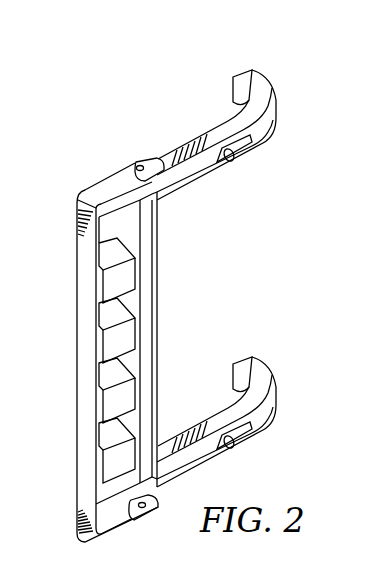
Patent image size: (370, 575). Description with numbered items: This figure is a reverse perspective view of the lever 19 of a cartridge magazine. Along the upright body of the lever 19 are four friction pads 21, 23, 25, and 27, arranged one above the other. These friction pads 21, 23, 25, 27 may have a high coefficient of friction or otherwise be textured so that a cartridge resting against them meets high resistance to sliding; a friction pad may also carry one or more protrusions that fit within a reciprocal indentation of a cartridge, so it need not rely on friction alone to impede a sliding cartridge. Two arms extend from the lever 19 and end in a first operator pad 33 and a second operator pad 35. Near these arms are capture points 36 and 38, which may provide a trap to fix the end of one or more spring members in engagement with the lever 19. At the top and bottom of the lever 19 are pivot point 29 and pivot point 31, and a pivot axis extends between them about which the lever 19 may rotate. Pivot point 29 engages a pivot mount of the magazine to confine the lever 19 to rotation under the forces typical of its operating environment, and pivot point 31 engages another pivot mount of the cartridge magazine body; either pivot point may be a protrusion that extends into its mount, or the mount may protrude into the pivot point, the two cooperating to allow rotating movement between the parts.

The lever 19 is at (117, 84).
The friction pad 21 is at (117, 279).
The friction pad 23 is at (117, 339).
The friction pad 25 is at (117, 399).
The friction pad 27 is at (117, 459).
The pivot point 29 is at (137, 165).
The pivot point 31 is at (132, 511).
The first operator pad 33 is at (233, 76).
The second operator pad 35 is at (234, 363).
The capture point 36 is at (237, 160).
The capture point 38 is at (237, 447).